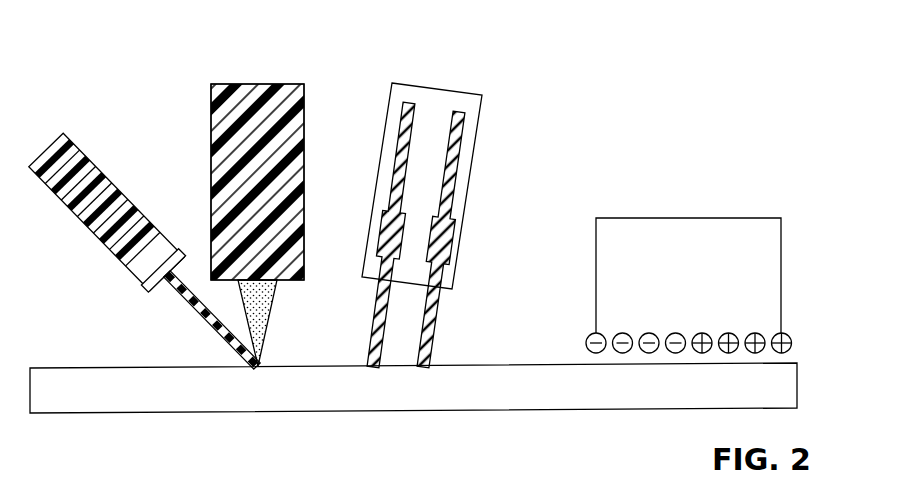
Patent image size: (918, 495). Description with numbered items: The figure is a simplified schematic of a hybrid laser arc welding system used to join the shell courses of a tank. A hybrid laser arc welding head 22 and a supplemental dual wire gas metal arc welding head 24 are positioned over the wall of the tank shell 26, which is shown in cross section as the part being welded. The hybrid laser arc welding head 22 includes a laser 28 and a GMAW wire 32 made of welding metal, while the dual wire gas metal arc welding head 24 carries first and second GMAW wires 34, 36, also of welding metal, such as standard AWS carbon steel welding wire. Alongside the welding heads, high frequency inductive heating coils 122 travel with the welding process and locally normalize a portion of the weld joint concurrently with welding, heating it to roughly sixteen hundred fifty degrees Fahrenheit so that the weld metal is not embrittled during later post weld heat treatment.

The hybrid laser arc welding head 22 is at (163, 67).
The dual wire gas metal arc welding head 24 is at (502, 90).
The wall of the tank shell 26 is at (172, 398).
The laser 28 is at (273, 295).
The GMAW wire 32 is at (176, 297).
The first GMAW wire 34 is at (377, 303).
The second GMAW wire 36 is at (433, 327).
The inductive heating coils 122 is at (792, 337).